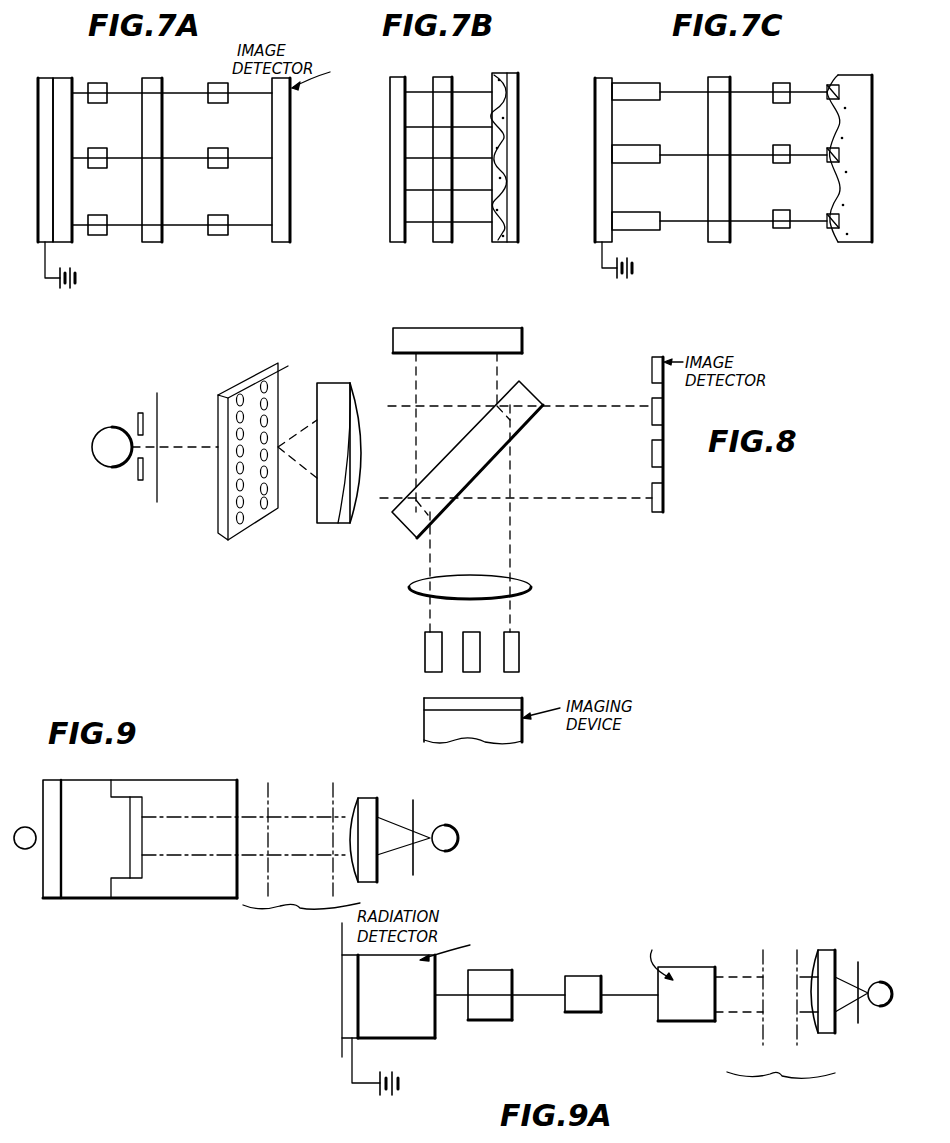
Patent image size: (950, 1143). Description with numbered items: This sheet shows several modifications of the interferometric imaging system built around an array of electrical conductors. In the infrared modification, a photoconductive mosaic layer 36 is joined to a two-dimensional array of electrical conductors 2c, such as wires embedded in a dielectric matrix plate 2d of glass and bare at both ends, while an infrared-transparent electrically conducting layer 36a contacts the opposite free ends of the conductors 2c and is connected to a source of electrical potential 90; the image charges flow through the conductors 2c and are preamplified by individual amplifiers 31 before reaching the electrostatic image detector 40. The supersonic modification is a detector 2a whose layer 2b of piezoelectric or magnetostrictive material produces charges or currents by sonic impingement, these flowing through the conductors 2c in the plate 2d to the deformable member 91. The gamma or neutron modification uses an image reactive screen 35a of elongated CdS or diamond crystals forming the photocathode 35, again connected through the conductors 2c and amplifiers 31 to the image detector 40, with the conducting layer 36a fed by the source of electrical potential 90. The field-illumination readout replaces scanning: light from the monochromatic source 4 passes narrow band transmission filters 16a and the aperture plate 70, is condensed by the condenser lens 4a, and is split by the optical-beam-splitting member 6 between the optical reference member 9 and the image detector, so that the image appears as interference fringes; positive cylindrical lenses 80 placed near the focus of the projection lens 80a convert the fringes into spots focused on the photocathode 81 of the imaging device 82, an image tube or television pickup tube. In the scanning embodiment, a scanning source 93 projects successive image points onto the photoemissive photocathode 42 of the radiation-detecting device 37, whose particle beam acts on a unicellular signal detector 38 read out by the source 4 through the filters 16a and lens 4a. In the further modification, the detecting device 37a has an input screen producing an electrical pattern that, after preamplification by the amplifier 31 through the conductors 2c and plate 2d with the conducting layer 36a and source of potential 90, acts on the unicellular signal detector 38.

In FIG. 7B, the detector 2a is at (425, 77).
In FIG. 7B, the layer of piezoelectric or magnetostrictive material 2b is at (392, 244).
In FIG. 7A, the electrical conductors 2c is at (126, 92).
In FIG. 7B, the electrical conductors 2c is at (478, 82).
In FIG. 7C, the electrical conductors 2c is at (677, 223).
In FIG. 9A, the electrical conductors 2c is at (538, 998).
In FIG. 7A, the dielectric matrix plate 2d is at (155, 244).
In FIG. 7B, the dielectric matrix plate 2d is at (443, 215).
In FIG. 7C, the dielectric matrix plate 2d is at (722, 236).
In FIG. 9A, the dielectric matrix plate 2d is at (490, 1012).
In FIG. 8, the source of monochromatic radiation 4 is at (108, 464).
In FIG. 9, the source of monochromatic radiation 4 is at (455, 847).
In FIG. 9A, the source of monochromatic radiation 4 is at (878, 1006).
In FIG. 8, the condenser lens 4a is at (348, 525).
In FIG. 9, the condenser lens 4a is at (356, 808).
In FIG. 9A, the condenser lens 4a is at (815, 1035).
In FIG. 8, the optical-beam-splitting member 6 is at (535, 392).
In FIG. 8, the optical reference member 9 is at (522, 340).
In FIG. 8, the narrow band transmission filters 16a is at (160, 503).
In FIG. 9, the narrow band transmission filters 16a is at (416, 813).
In FIG. 9A, the narrow band transmission filters 16a is at (860, 962).
In FIG. 7A, the individual amplifiers 31 is at (220, 234).
In FIG. 7C, the individual amplifiers 31 is at (782, 228).
In FIG. 9A, the individual amplifiers 31 is at (590, 1006).
In FIG. 7C, the photoconductive photocathode 35 is at (621, 78).
In FIG. 7C, the image reactive screen 35a is at (644, 90).
In FIG. 7A, the photoconductive mosaic layer 36 is at (98, 232).
In FIG. 7A, the light-transparent electrically conducting layer 36a is at (38, 90).
In FIG. 7C, the light-transparent electrically conducting layer 36a is at (600, 200).
In FIG. 9A, the light-transparent electrically conducting layer 36a is at (350, 1005).
In FIG. 9, the radiation-detecting device 37 is at (205, 798).
In FIG. 9A, the detecting device 37a is at (541, 946).
In FIG. 9, the signal detector 38 is at (134, 888).
In FIG. 9A, the signal detector 38 is at (692, 1022).
In FIG. 7C, the electrostatic image detector 40 is at (853, 96).
In FIG. 9, the photoemissive photocathode 42 is at (50, 892).
In FIG. 8, the aperture plate 70 is at (256, 520).
In FIG. 8, the positive cylindrical lenses 80 is at (519, 650).
In FIG. 8, the projection lens 80a is at (531, 585).
In FIG. 8, the photocathode 81 is at (424, 704).
In FIG. 8, the imaging device 82 is at (424, 721).
In FIG. 7A, the source of electrical potential 90 is at (62, 290).
In FIG. 7C, the source of electrical potential 90 is at (617, 278).
In FIG. 9A, the source of electrical potential 90 is at (399, 1086).
In FIG. 7B, the deformable member 91 is at (505, 241).
In FIG. 9, the scanning source of image-forming radiation 93 is at (25, 826).